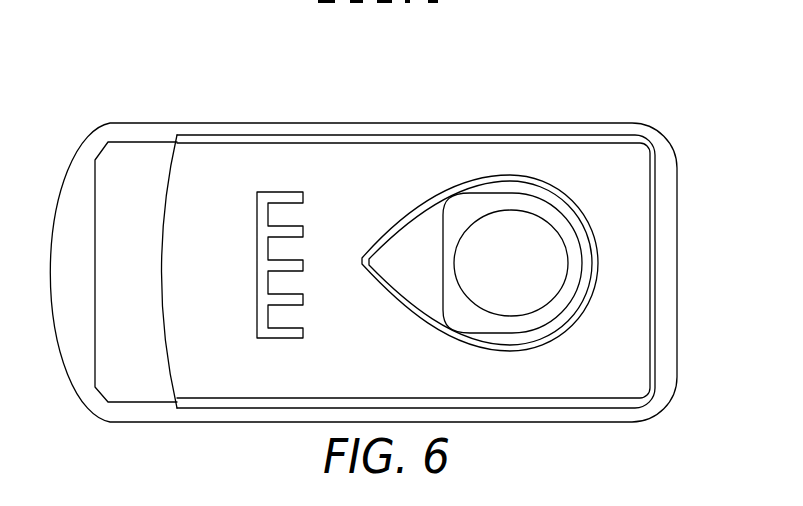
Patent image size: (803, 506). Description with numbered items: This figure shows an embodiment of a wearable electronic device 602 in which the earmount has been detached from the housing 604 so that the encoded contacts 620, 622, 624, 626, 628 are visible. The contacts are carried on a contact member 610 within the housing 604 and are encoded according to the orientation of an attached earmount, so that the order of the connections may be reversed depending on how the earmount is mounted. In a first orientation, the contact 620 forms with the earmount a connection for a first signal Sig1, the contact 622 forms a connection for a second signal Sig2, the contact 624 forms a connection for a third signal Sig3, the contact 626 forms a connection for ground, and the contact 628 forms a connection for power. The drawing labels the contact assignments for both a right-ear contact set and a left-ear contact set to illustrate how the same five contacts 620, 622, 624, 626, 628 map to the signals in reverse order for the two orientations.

The contact set assembly 602 is at (654, 43).
The housing 604 is at (630, 123).
The connector 610 is at (262, 340).
The contact 620 is at (257, 197).
The contact 622 is at (257, 231).
The contact 624 is at (257, 264).
The contact 626 is at (257, 298).
The contact 628 is at (257, 332).